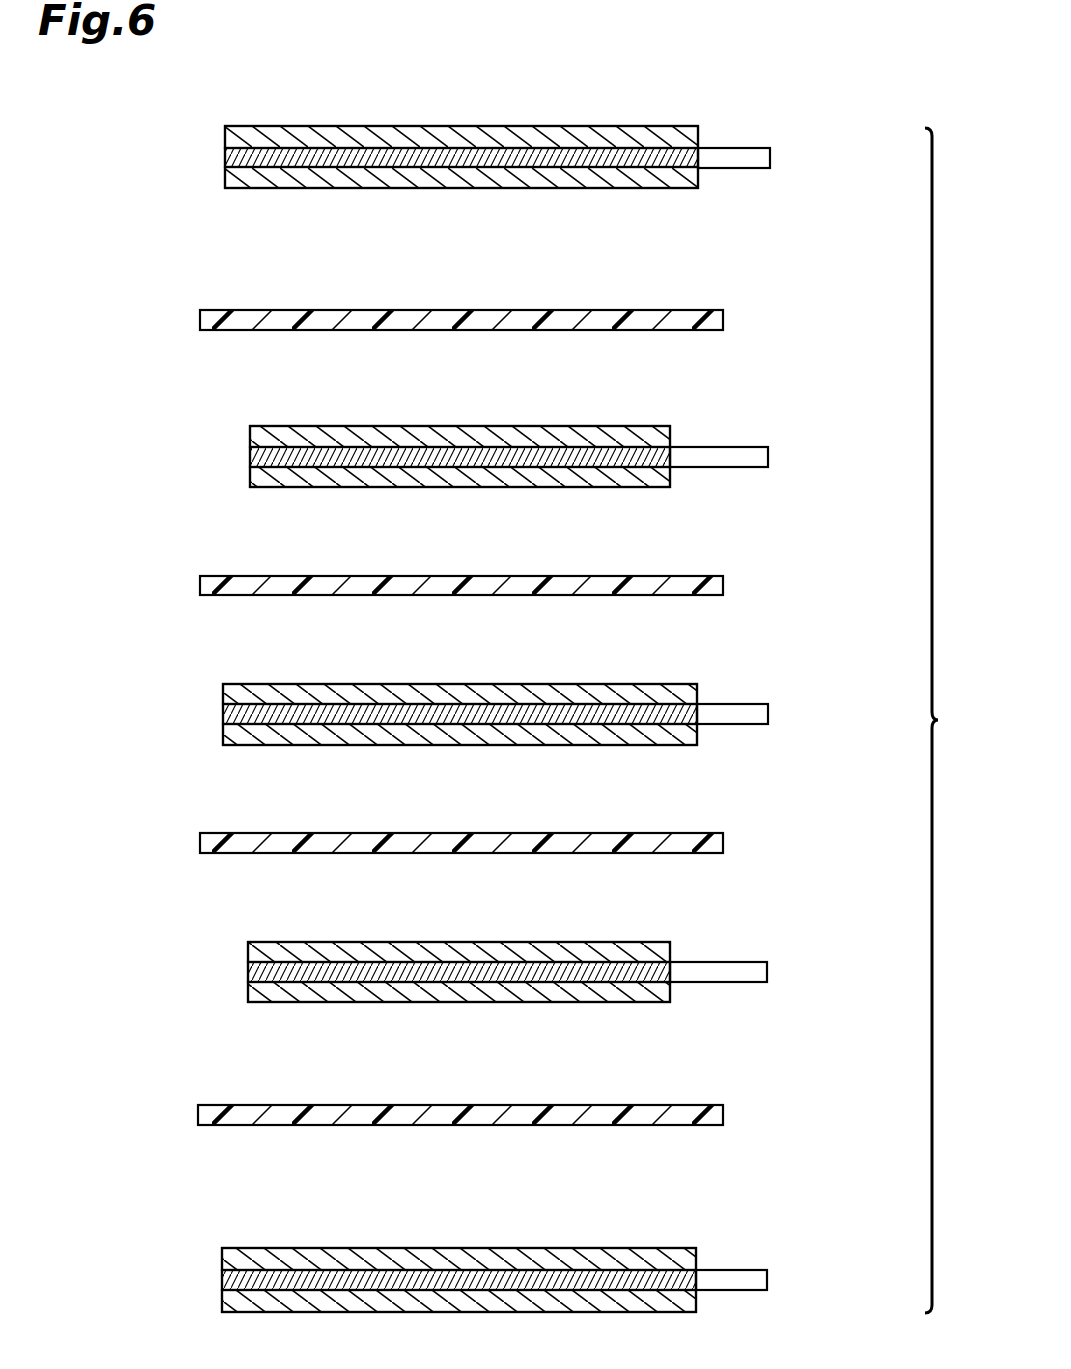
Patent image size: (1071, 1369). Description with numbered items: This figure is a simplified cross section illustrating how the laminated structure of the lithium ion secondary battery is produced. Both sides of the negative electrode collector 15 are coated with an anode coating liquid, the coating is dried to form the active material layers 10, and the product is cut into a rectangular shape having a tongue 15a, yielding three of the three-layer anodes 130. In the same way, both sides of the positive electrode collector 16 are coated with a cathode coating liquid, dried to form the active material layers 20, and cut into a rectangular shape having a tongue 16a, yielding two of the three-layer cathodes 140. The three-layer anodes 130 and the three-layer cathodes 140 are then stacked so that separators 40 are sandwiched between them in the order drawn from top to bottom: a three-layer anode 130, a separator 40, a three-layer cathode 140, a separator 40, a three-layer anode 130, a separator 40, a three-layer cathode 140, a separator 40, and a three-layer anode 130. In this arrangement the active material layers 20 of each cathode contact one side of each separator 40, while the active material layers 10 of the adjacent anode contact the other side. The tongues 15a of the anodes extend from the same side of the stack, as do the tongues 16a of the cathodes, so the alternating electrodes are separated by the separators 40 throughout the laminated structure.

The active material layer 10 is at (233, 136).
The negative electrode collector 15 is at (233, 151).
The tongue 15a is at (772, 159).
The three-layer anode 130 is at (147, 118).
The active material layer 20 is at (258, 436).
The positive electrode collector 16 is at (258, 451).
The tongue 16a is at (770, 458).
The three-layer cathode 140 is at (147, 418).
The separator 40 is at (202, 320).